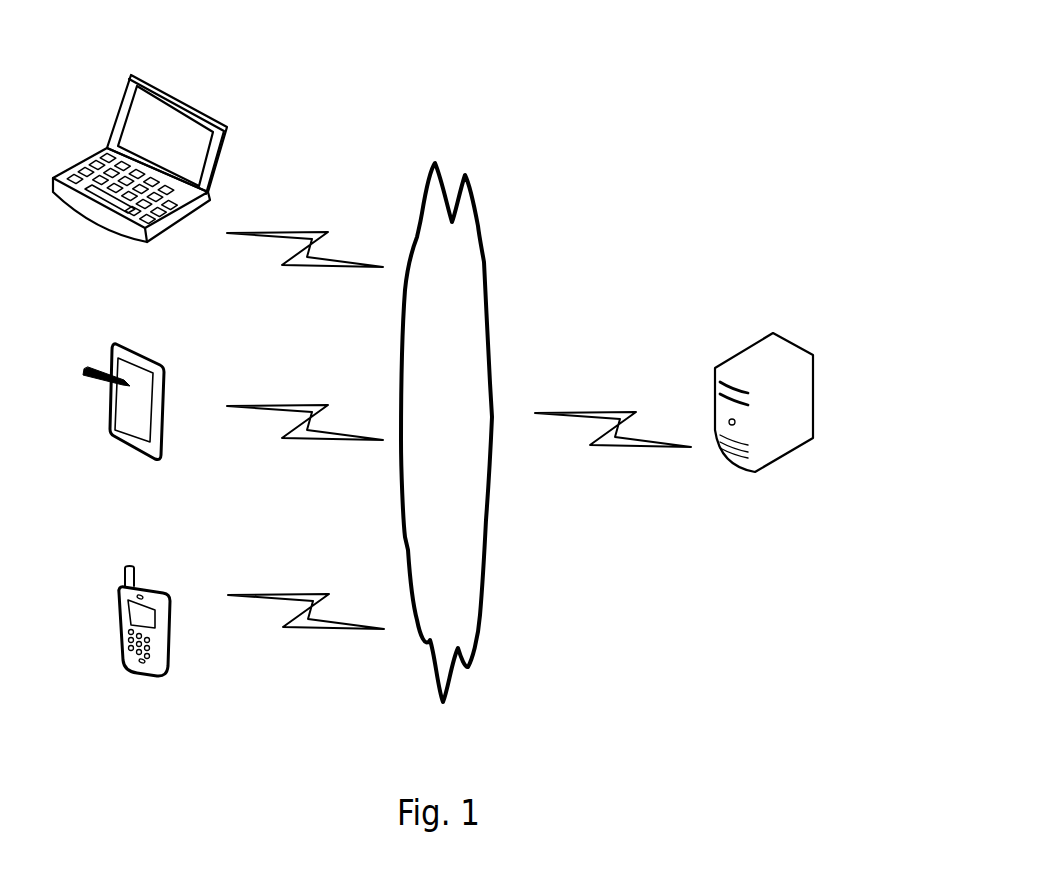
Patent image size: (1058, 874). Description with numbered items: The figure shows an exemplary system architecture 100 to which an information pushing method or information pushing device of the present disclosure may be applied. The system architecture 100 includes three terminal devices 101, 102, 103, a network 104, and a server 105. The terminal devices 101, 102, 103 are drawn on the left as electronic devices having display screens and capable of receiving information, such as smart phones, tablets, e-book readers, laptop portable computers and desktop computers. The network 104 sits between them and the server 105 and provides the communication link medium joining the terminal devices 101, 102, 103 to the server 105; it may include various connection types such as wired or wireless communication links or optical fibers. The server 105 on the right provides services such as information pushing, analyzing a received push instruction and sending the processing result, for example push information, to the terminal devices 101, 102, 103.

The system architecture 100 is at (717, 62).
The terminal device 101 is at (144, 644).
The terminal device 102 is at (123, 422).
The terminal device 103 is at (140, 182).
The network 104 is at (446, 432).
The server 105 is at (764, 426).